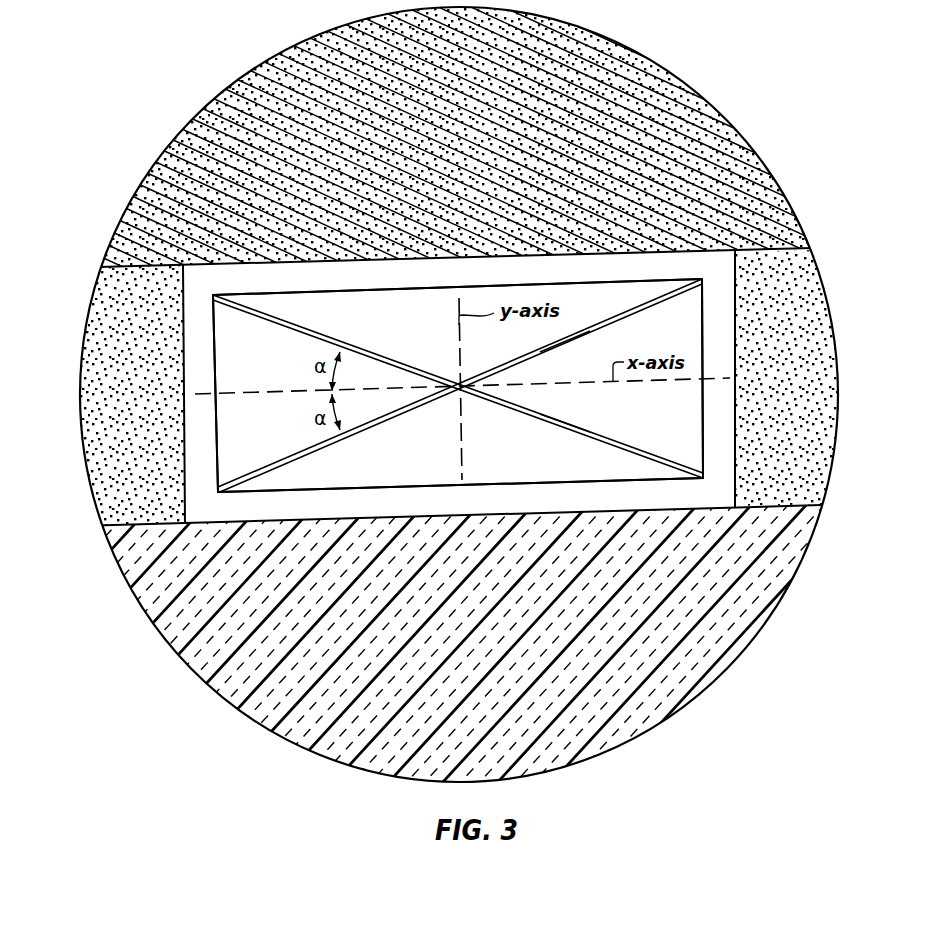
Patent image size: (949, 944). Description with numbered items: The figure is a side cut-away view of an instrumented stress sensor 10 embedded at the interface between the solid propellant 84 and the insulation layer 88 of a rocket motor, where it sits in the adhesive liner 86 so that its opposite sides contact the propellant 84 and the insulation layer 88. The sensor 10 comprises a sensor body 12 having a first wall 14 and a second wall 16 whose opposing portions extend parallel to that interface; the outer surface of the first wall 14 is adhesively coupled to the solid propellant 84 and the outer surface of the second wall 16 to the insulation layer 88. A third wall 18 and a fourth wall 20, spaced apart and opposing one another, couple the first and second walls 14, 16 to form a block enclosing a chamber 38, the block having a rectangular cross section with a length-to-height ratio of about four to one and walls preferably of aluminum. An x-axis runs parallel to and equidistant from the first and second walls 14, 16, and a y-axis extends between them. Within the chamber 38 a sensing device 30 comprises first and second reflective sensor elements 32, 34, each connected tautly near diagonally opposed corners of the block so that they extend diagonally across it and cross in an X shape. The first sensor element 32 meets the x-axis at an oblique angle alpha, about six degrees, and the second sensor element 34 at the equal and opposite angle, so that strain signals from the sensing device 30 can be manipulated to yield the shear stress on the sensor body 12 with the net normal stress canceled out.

The stress sensor 10 is at (750, 382).
The sensor body 12 is at (204, 348).
The first wall 14 is at (445, 285).
The second wall 16 is at (511, 510).
The third wall 18 is at (211, 445).
The fourth wall 20 is at (728, 351).
The sensing device 30 is at (568, 364).
The first reflective sensor element 32 is at (506, 410).
The second reflective sensor element 34 is at (619, 317).
The chamber 38 is at (404, 333).
The solid propellant 84 is at (676, 97).
The adhesive liner 86 is at (803, 454).
The insulation layer 88 is at (712, 635).